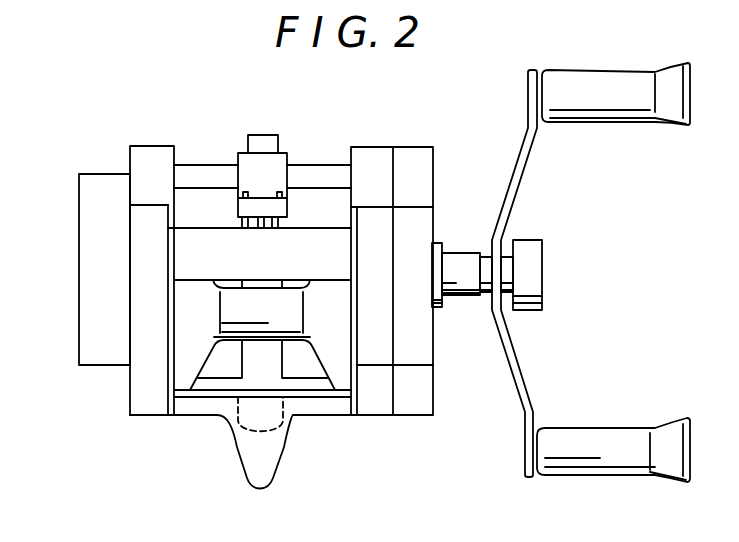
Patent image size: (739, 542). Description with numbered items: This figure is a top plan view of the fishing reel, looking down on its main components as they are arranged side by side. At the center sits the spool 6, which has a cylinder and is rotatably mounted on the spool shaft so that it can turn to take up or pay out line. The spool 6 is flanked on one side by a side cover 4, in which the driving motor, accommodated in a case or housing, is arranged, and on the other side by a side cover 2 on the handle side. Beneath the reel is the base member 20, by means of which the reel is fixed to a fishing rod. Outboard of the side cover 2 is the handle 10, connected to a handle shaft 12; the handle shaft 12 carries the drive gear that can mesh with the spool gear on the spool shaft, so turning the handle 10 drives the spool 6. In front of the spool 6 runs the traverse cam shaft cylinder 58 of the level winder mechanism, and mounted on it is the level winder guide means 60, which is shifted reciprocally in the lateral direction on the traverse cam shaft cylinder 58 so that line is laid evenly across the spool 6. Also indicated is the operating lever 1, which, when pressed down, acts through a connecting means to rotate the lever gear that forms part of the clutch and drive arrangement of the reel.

The operating lever 1 is at (273, 468).
The side cover 2 is at (409, 140).
The side cover 4 is at (150, 145).
The spool 6 is at (186, 357).
The handle 10 is at (522, 163).
The handle shaft 12 is at (468, 283).
The base member 20 is at (222, 383).
The traverse cam shaft cylinder 58 is at (207, 165).
The level winder guide means 60 is at (267, 172).